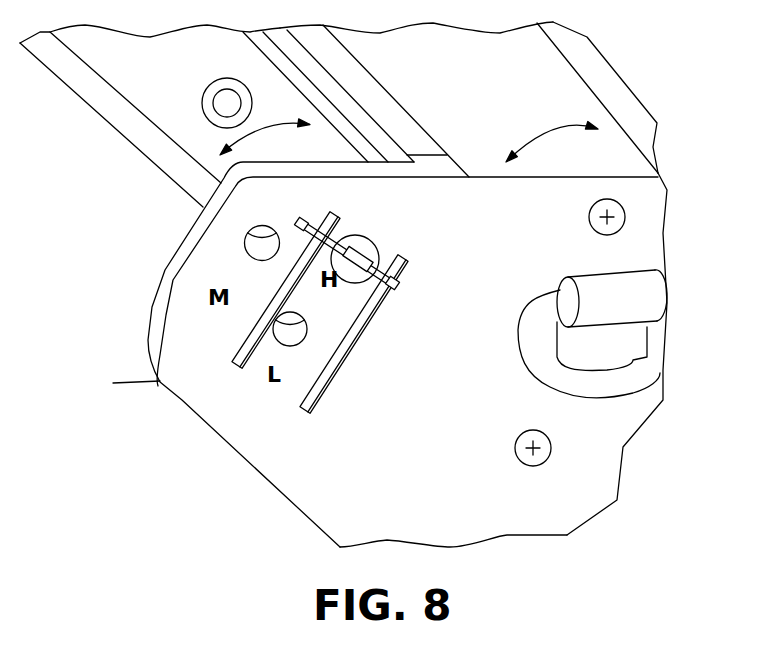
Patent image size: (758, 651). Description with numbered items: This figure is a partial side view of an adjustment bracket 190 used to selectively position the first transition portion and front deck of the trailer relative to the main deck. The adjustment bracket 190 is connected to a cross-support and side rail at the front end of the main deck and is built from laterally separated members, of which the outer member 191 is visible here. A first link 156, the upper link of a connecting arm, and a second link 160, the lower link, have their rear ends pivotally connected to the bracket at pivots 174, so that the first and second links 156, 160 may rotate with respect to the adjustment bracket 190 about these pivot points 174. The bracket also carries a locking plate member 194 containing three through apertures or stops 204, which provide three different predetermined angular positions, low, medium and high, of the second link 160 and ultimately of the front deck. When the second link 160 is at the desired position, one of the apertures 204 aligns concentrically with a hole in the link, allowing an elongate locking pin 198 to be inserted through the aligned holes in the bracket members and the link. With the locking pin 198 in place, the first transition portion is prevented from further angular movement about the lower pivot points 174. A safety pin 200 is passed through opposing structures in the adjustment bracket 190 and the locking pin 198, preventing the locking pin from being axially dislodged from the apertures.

The first link 156 is at (560, 102).
The second link 160 is at (189, 92).
The pivot 174 is at (622, 205).
The adjustment bracket 190 is at (432, 258).
The outer member 191 is at (431, 428).
The locking plate member 194 is at (385, 327).
The locking pin 198 is at (352, 237).
The safety pin 200 is at (306, 226).
The aperture or stop 204 is at (273, 329).